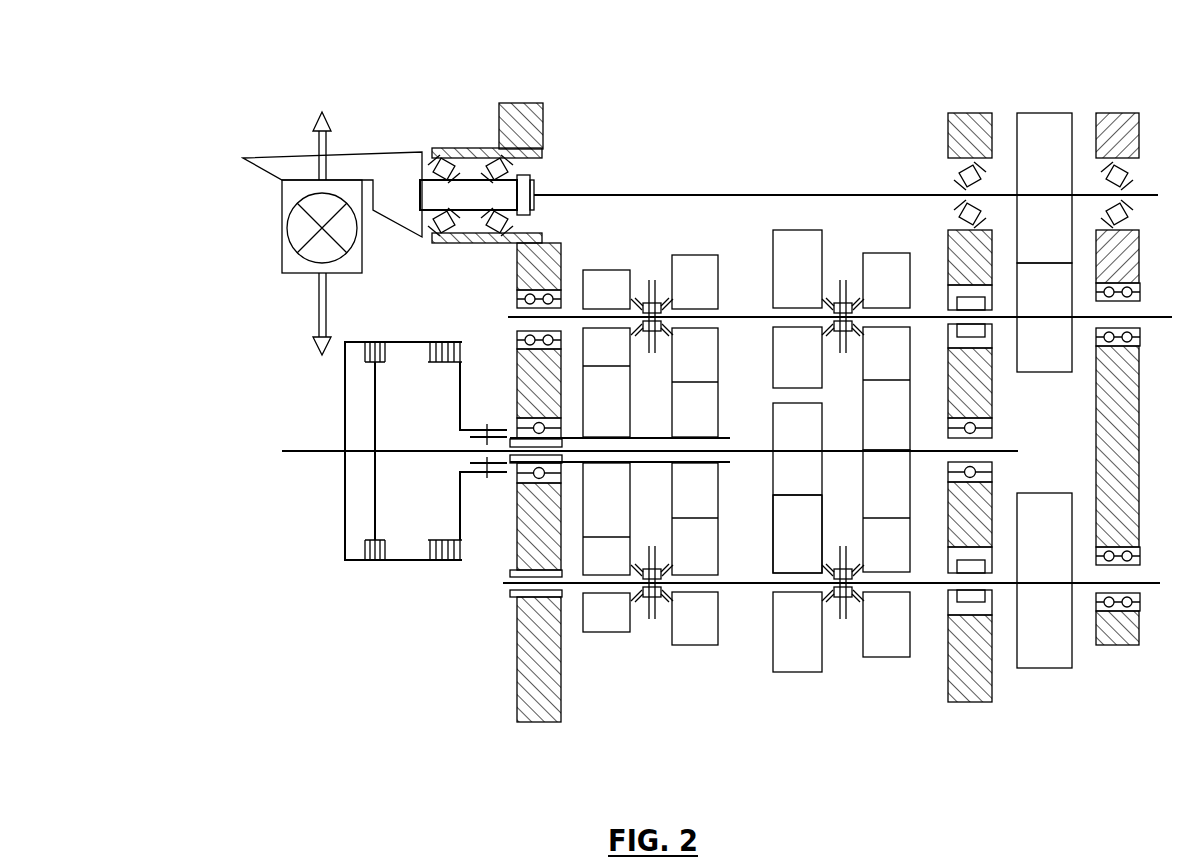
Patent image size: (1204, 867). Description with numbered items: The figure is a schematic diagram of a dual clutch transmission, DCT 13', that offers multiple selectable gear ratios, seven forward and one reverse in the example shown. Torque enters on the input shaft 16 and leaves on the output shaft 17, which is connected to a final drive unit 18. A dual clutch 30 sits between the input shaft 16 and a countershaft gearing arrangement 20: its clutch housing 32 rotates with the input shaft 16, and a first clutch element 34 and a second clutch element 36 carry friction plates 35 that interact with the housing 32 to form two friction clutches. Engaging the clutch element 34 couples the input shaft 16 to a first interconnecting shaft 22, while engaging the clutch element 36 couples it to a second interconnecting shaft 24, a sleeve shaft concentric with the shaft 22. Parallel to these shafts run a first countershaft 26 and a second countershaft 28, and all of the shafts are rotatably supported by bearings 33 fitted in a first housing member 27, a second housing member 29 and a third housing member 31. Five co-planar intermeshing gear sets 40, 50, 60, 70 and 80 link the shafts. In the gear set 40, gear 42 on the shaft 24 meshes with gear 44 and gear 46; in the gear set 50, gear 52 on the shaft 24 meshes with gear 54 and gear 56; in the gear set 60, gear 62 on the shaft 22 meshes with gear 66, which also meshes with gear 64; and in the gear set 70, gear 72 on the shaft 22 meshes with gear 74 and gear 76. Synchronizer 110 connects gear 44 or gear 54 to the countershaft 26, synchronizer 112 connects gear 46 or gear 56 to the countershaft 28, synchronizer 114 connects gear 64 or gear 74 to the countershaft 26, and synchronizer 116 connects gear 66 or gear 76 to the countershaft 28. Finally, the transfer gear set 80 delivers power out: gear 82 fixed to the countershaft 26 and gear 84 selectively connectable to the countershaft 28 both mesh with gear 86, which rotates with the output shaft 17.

The DCT 13' is at (677, 413).
The input shaft 16 is at (296, 456).
The output shaft 17 is at (632, 193).
The final drive unit 18 is at (365, 150).
The countershaft gearing arrangement 20 is at (784, 453).
The first interconnecting shaft 22 is at (740, 449).
The second interconnecting shaft 24 is at (650, 436).
The first countershaft 26 is at (735, 312).
The first housing member 27 is at (540, 722).
The second countershaft 28 is at (740, 586).
The second housing member 29 is at (972, 703).
The dual clutch 30 is at (426, 474).
The third housing member 31 is at (1117, 646).
The clutch housing 32 is at (403, 342).
The bearings 33 is at (524, 297).
The first clutch element 34 is at (369, 398).
The friction plates 35 is at (381, 546).
The second clutch element 36 is at (455, 378).
The gear set 40 is at (606, 495).
The gear 42 is at (592, 413).
The gear 44 is at (592, 300).
The gear 46 is at (592, 565).
The co-planar gear set 50 is at (695, 492).
The gear 52 is at (683, 418).
The gear 54 is at (683, 286).
The gear 56 is at (683, 555).
The co-planar gear set 60 is at (797, 495).
The gear 62 is at (785, 433).
The gear 64 is at (785, 278).
The gear 66 is at (785, 538).
The co-planar gear set 70 is at (886, 504).
The gear 72 is at (873, 421).
The gear 74 is at (873, 291).
The gear 76 is at (873, 553).
The transfer gear set 80 is at (1044, 437).
The gear 82 is at (1031, 303).
The gear 84 is at (1031, 543).
The gear 86 is at (1031, 166).
The synchronizer 110 is at (651, 258).
The synchronizer 112 is at (655, 630).
The synchronizer 114 is at (842, 258).
The synchronizer 116 is at (845, 633).